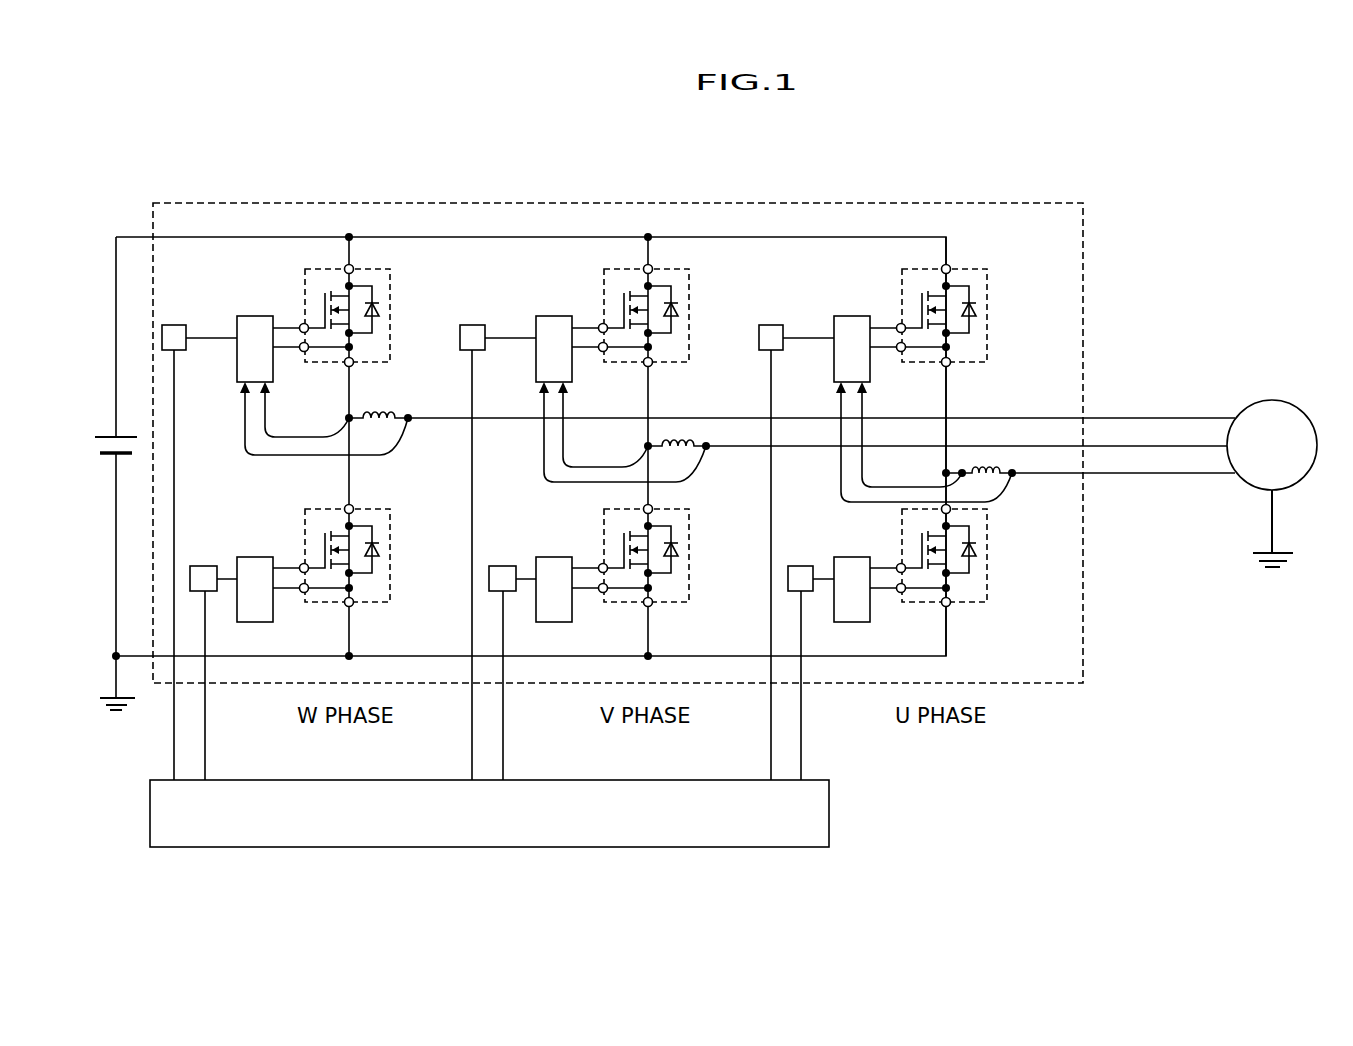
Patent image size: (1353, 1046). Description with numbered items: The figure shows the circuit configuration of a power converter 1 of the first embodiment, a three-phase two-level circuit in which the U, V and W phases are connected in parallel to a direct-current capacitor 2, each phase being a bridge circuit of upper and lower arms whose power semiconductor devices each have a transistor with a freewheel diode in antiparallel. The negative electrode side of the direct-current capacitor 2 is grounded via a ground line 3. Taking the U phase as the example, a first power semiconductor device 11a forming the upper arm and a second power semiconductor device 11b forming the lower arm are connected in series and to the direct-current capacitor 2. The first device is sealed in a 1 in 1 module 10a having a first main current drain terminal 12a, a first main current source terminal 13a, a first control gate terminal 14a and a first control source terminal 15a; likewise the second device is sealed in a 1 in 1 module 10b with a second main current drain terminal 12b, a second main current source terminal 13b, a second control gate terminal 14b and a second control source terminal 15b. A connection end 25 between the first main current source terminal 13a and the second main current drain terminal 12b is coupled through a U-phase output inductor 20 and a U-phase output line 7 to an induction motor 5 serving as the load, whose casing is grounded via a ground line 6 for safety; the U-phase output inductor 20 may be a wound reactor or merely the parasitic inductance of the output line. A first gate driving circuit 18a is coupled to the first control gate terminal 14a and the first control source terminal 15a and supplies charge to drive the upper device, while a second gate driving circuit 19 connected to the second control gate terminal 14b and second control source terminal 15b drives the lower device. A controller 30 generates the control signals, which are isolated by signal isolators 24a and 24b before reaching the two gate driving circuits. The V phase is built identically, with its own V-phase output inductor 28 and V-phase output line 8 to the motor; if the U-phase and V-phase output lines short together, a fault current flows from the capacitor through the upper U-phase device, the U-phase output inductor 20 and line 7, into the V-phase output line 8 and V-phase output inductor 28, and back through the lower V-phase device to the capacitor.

The power converter 1 is at (458, 203).
The direct-current capacitor 2 is at (97, 433).
The ground line 3 is at (115, 688).
The induction motor 5 is at (1298, 413).
The ground line 6 is at (1273, 520).
The U-phase output line 7 is at (1170, 476).
The V-phase output line 8 is at (1172, 443).
The 1 in 1 module 10a is at (920, 270).
The 1 in 1 module 10b is at (925, 604).
The first power semiconductor device 11a is at (982, 307).
The second power semiconductor device 11b is at (982, 548).
The first main current drain terminal 12a is at (951, 268).
The second main current drain terminal 12b is at (951, 511).
The first main current source terminal 13a is at (951, 364).
The second main current source terminal 13b is at (951, 605).
The first control gate terminal 14a is at (898, 325).
The second control gate terminal 14b is at (898, 565).
The first control source terminal 15a is at (900, 350).
The second control source terminal 15b is at (900, 592).
The first gate driving circuit 18a is at (846, 316).
The second gate driving circuit 19 is at (848, 557).
The U-phase output inductor 20 is at (990, 466).
The signal isolator 24a is at (771, 325).
The signal isolator 24b is at (801, 566).
The connection end 25 is at (944, 473).
The V-phase output inductor 28 is at (683, 440).
The controller 30 is at (830, 812).